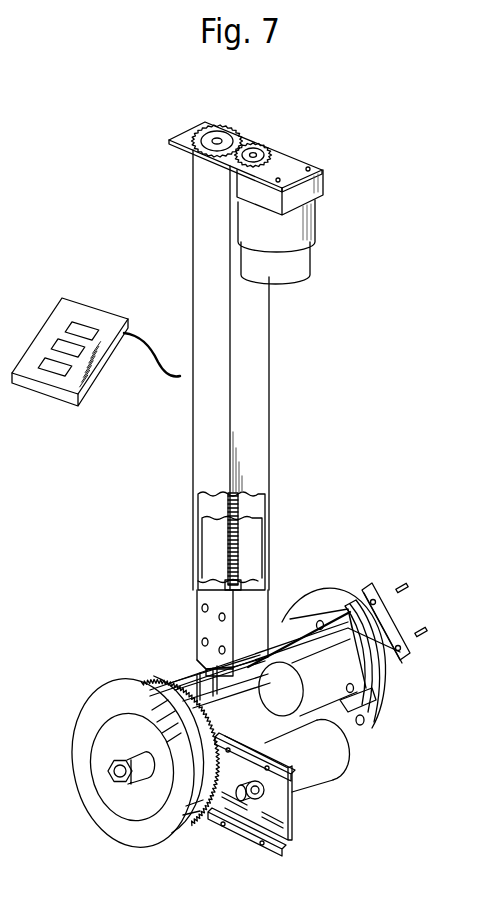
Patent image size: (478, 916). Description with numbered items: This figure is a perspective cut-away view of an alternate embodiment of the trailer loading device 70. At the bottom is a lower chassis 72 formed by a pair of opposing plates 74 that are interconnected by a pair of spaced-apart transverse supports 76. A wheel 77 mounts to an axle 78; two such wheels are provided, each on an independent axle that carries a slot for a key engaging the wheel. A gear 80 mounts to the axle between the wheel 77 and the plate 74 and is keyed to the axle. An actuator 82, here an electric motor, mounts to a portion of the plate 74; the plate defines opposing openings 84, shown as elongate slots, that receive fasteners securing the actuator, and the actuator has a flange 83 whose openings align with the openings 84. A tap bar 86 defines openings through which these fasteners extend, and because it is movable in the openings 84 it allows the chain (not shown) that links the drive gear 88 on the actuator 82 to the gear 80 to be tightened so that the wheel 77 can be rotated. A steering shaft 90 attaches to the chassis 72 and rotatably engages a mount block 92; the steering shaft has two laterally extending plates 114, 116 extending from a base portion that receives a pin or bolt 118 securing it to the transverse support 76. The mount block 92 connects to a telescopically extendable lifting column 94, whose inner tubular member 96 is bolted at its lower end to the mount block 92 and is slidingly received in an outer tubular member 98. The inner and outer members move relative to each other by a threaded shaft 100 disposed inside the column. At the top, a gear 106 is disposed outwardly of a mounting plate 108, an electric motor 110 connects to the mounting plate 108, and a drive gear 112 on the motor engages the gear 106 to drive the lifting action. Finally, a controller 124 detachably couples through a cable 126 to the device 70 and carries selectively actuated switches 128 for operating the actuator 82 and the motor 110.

The trailer loading device 70 is at (131, 522).
The lower chassis 72 is at (117, 634).
The plate 74 is at (347, 603).
The transverse support 76 is at (275, 667).
The wheel 77 is at (140, 830).
The axle 78 is at (130, 750).
The gear 80 is at (195, 800).
The actuator 82 is at (392, 777).
The flange 83 is at (367, 683).
The openings 84 is at (285, 840).
The tap bar 86 is at (390, 615).
The drive gear 88 is at (272, 792).
The steering shaft 90 is at (222, 668).
The mount block 92 is at (205, 627).
The lifting column 94 is at (305, 452).
The inner tubular member 96 is at (252, 543).
The outer tubular member 98 is at (235, 380).
The threaded shaft 100 is at (227, 540).
The gear 106 is at (235, 133).
The mounting plate 108 is at (288, 160).
The electric motor 110 is at (307, 215).
The drive gear 112 is at (263, 147).
The laterally extending plate 114 is at (183, 677).
The laterally extending plate 116 is at (280, 622).
The pin or bolt 118 is at (363, 718).
The controller 124 is at (62, 298).
The cable 126 is at (143, 355).
The switches 128 is at (80, 322).